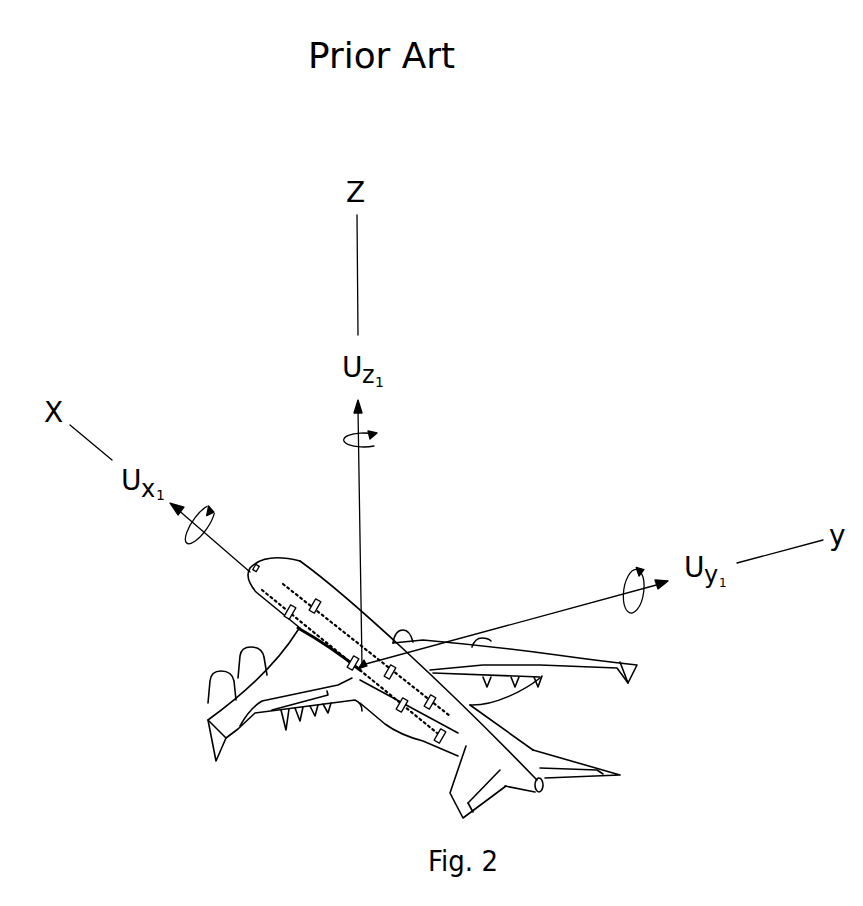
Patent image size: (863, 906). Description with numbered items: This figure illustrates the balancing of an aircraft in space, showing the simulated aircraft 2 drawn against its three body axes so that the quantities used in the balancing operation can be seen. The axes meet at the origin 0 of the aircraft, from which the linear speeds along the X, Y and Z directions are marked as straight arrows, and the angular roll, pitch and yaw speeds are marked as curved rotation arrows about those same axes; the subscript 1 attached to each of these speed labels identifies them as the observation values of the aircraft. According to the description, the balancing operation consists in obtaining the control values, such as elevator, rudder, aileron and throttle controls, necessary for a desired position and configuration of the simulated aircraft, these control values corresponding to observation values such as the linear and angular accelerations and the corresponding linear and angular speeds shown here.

The origin of aircraft body axes 0 is at (360, 708).
The angular rate arrows P1, Q1, R1 1 is at (413, 517).
The aircraft 2 is at (422, 688).